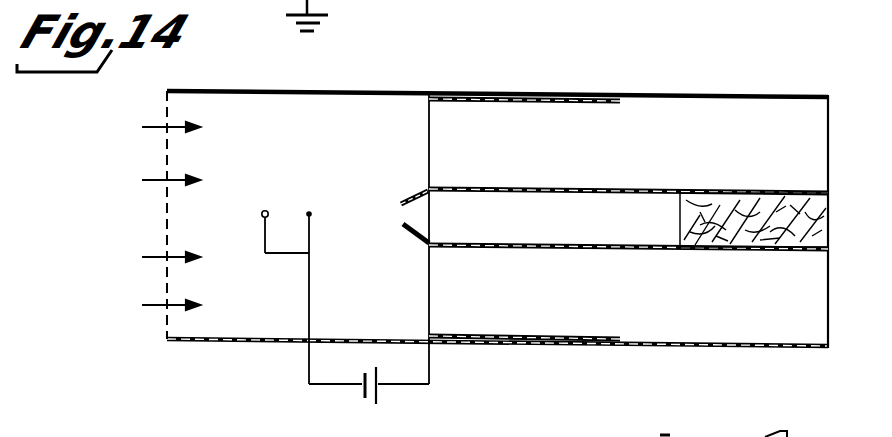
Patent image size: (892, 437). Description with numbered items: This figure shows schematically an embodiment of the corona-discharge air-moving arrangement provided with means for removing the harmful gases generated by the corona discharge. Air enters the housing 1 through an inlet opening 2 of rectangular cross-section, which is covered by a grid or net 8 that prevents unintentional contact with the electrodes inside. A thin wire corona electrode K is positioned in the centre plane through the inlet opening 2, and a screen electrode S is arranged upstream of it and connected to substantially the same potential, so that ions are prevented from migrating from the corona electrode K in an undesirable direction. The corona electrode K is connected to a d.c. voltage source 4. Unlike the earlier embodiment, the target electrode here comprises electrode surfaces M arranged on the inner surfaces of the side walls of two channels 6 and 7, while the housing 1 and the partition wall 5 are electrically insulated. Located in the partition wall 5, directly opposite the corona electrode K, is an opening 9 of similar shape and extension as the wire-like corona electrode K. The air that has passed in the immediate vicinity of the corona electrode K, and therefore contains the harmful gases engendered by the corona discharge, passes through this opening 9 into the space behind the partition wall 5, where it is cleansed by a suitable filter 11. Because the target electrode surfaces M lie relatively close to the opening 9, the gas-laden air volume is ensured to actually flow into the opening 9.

The housing 1 is at (326, 91).
The inlet opening 2 is at (187, 152).
The d.c. voltage source 4 is at (372, 404).
The partition wall 5 is at (413, 192).
The channel 6 is at (669, 112).
The channel 7 is at (675, 318).
The grid or net 8 is at (165, 218).
The opening 9 is at (395, 216).
The filter 11 is at (728, 191).
The target electrode surfaces M is at (506, 94).
The screen electrode S is at (264, 210).
The corona electrode K is at (309, 211).